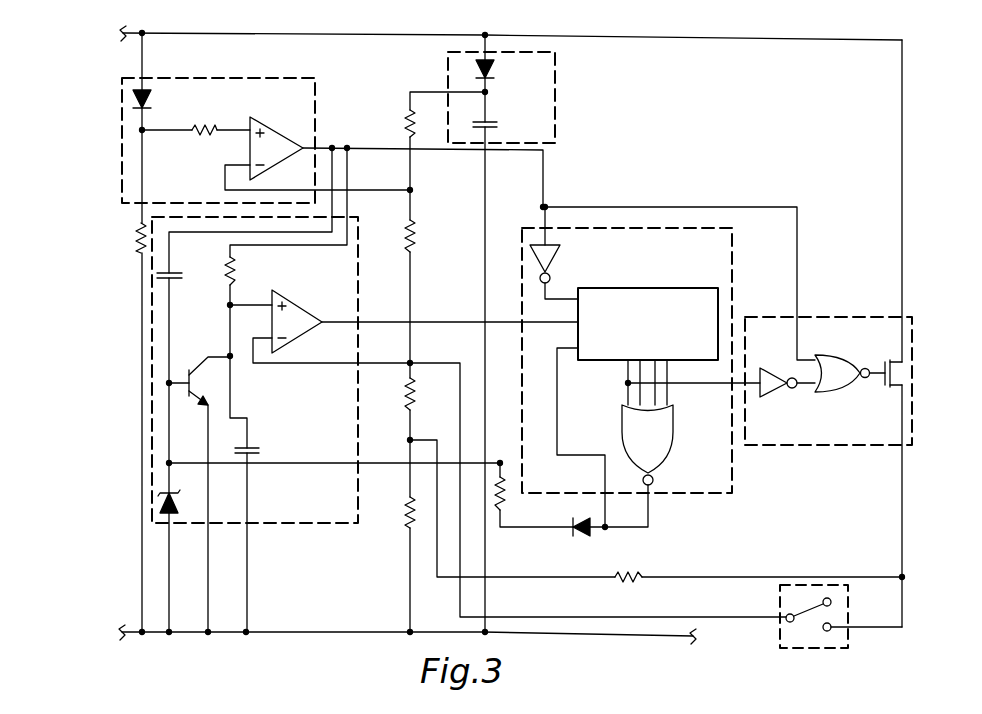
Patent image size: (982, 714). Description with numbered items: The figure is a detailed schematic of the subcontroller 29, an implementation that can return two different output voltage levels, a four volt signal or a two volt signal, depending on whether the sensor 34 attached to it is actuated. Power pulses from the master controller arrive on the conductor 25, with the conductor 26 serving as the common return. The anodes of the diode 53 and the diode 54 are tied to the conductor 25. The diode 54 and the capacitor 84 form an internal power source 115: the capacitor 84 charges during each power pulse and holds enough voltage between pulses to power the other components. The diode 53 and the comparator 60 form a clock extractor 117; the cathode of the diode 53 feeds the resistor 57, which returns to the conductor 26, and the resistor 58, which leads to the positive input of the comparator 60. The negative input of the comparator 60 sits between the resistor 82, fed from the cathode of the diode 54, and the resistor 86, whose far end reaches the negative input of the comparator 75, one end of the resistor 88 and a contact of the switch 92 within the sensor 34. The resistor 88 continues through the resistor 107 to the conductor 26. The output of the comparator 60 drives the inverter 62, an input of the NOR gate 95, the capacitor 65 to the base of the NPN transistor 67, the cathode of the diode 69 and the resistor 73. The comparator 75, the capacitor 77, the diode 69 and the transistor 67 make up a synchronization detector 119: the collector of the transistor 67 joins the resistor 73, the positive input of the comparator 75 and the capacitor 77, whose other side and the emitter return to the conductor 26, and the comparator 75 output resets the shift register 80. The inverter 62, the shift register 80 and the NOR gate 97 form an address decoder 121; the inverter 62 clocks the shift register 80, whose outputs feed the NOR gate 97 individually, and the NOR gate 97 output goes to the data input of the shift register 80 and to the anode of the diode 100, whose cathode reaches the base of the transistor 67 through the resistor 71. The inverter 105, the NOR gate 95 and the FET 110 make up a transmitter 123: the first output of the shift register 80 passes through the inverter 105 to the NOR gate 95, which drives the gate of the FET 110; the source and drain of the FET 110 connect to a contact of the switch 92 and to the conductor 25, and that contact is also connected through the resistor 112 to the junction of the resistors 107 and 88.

The conductor 25 is at (238, 31).
The conductor 26 is at (330, 637).
The subcontroller 29 is at (620, 650).
The sensor 34 is at (779, 640).
The diode 53 is at (152, 97).
The diode 54 is at (492, 70).
The resistor 57 is at (138, 246).
The resistor 58 is at (207, 132).
The comparator 60 is at (290, 110).
The inverter 62 is at (553, 265).
The capacitor 65 is at (176, 270).
The NPN transistor 67 is at (192, 372).
The diode 69 is at (178, 508).
The resistor 71 is at (500, 480).
The resistor 73 is at (238, 277).
The comparator 75 is at (330, 290).
The capacitor 77 is at (252, 446).
The shift register 80 is at (648, 346).
The resistor 82 is at (408, 122).
The capacitor 84 is at (492, 123).
The resistor 86 is at (415, 246).
The resistor 88 is at (406, 402).
The switch 92 is at (791, 602).
The NOR gate 95 is at (856, 352).
The NOR gate 97 is at (673, 456).
The diode 100 is at (580, 540).
The inverter 105 is at (775, 397).
The resistor 107 is at (405, 522).
The FET 110 is at (878, 383).
The resistor 112 is at (625, 572).
The internal power source 115 is at (560, 101).
The clock extractor 117 is at (120, 200).
The synchronization detector 119 is at (151, 378).
The address decoder 121 is at (732, 488).
The transmitter 123 is at (856, 294).